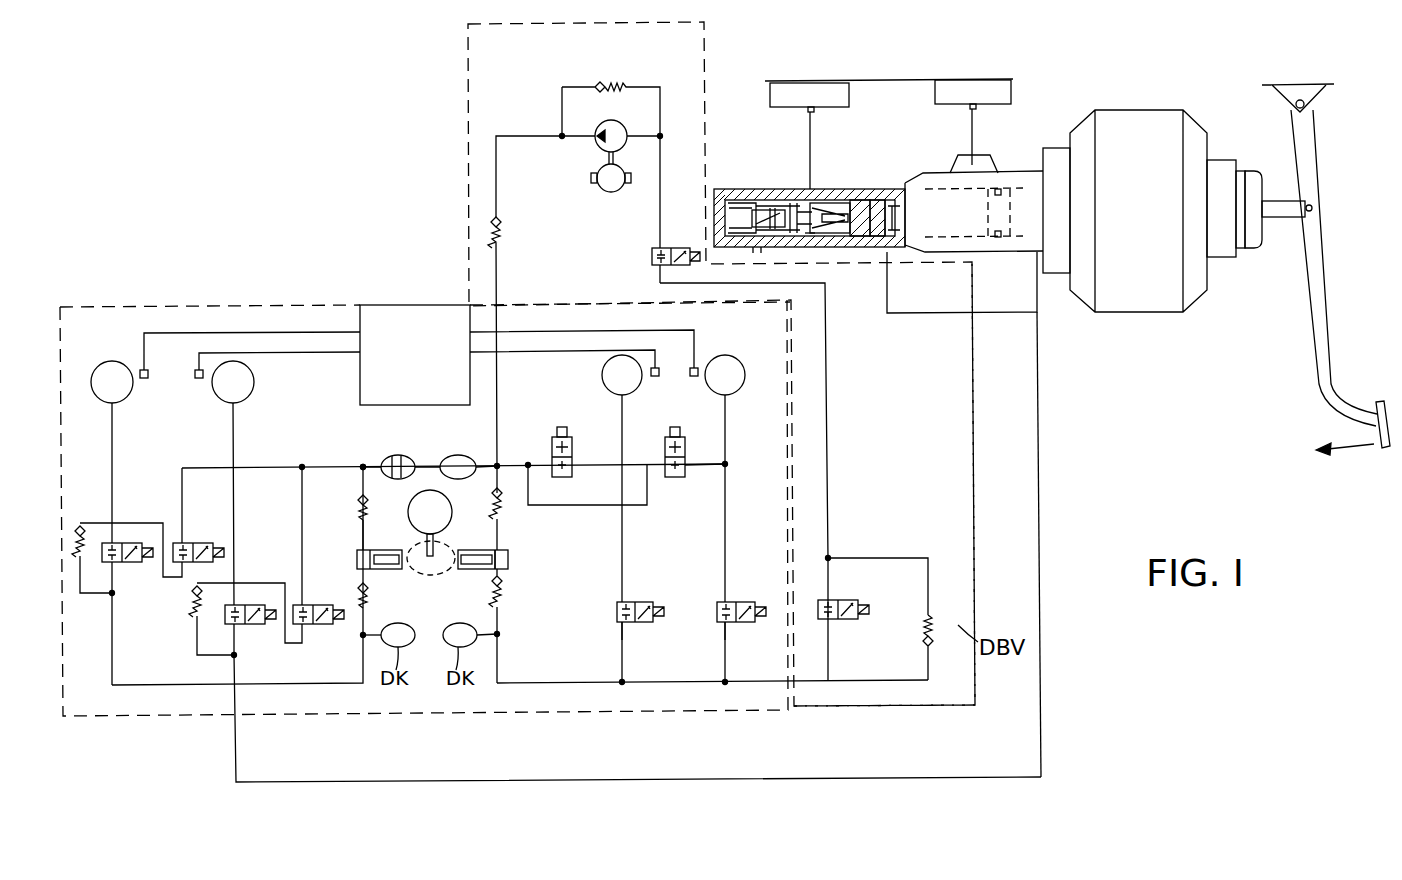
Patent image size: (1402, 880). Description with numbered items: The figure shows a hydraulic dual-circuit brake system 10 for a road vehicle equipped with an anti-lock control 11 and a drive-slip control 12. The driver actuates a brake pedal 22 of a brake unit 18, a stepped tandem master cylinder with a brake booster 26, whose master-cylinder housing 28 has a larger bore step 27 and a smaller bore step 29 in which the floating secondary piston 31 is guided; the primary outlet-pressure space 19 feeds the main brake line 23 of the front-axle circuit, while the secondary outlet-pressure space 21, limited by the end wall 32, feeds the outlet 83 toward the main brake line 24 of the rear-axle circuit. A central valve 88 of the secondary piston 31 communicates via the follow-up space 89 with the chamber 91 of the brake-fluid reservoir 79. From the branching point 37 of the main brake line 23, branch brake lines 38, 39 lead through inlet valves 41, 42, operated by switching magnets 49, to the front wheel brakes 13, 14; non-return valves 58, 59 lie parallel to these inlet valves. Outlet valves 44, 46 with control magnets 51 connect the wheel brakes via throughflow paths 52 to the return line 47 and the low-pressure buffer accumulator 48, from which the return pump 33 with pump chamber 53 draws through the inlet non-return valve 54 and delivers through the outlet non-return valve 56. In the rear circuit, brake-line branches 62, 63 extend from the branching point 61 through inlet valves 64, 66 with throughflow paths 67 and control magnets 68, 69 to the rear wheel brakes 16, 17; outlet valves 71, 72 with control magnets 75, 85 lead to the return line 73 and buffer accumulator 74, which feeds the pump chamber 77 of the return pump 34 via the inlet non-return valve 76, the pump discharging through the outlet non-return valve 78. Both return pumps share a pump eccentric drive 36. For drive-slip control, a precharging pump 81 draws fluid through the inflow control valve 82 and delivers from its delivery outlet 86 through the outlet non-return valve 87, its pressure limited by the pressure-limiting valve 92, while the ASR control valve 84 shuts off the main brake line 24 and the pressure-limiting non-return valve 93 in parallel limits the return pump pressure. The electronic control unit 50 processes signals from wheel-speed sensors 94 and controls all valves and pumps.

The hydraulic dual-circuit brake system 10 is at (345, 173).
The anti-lock control (ABS) 11 is at (316, 702).
The drive-slip control (ASR) 12 is at (906, 685).
The wheel brake of left front wheel 13 is at (100, 402).
The wheel brake of right front wheel 14 is at (245, 398).
The wheel brake of left rear wheel 16 is at (602, 375).
The wheel brake of right rear wheel 17 is at (745, 375).
The brake unit 18 is at (1010, 254).
The primary outlet-pressure space 19 is at (882, 200).
The secondary outlet-pressure space 21 is at (733, 200).
The brake pedal 22 is at (1318, 397).
The main brake line of front-axle brake circuit 23 is at (1041, 405).
The main brake line of rear-axle brake circuit 24 is at (828, 411).
The brake booster 26 is at (1133, 110).
The larger bore step 27 is at (922, 196).
The master-cylinder housing 28 is at (858, 200).
The smaller bore step 29 is at (752, 203).
The secondary piston 31 is at (812, 236).
The end wall 32 is at (714, 205).
The return pump of front-axle brake circuit 33 is at (385, 550).
The return pump of rear-axle brake circuit 34 is at (473, 550).
The pump eccentric drive 36 is at (430, 490).
The branching point 37 is at (236, 688).
The branch brake line 38 is at (112, 664).
The branch brake line 39 is at (234, 668).
The inlet valve 41 is at (119, 566).
The inlet valve 42 is at (237, 650).
The outlet valve 44 is at (165, 578).
The outlet valve 46 is at (302, 628).
The return line 47 is at (276, 466).
The low-pressure buffer accumulator 48 is at (382, 462).
The switching magnets 49 is at (250, 624).
The electronic control unit 50 is at (412, 320).
The control magnets 51 is at (340, 622).
The throughflow path 52 is at (318, 605).
The pump chamber 53 is at (355, 555).
The inlet non-return valve 54 is at (358, 500).
The outlet non-return valve 56 is at (368, 590).
The non-return valve 58 is at (80, 594).
The non-return valve 59 is at (195, 615).
The branching point 61 is at (728, 686).
The brake-line branch 62 is at (620, 648).
The brake-line branch 63 is at (722, 648).
The inlet valve 64 is at (632, 625).
The inlet valve 66 is at (737, 625).
The throughflow paths 67 is at (717, 612).
The control magnet 68 is at (650, 605).
The control magnet 69 is at (752, 605).
The outlet valve 71 is at (558, 478).
The outlet valve 72 is at (678, 478).
The return line 73 is at (500, 462).
The low-pressure buffer accumulator 74 is at (458, 455).
The control magnet 75 is at (568, 432).
The inlet non-return valve 76 is at (503, 497).
The pump chamber 77 is at (510, 557).
The outlet non-return valve 78 is at (505, 583).
The brake-fluid reservoir 79 is at (931, 80).
The precharging pump 81 is at (622, 128).
The inflow control valve 82 is at (652, 257).
The outlet of brake unit 83 is at (757, 254).
The ASR control valve 84 is at (838, 620).
The control magnet 85 is at (682, 432).
The delivery outlet 86 is at (560, 133).
The outlet non-return valve 87 is at (500, 230).
The central valve 88 is at (770, 210).
The follow-up space 89 is at (818, 204).
The chamber of brake-fluid reservoir 91 is at (812, 88).
The pressure-limiting valve 92 is at (597, 83).
The pressure-limiting non-return valve 93 is at (925, 640).
The wheel-speed sensors 94 is at (692, 368).